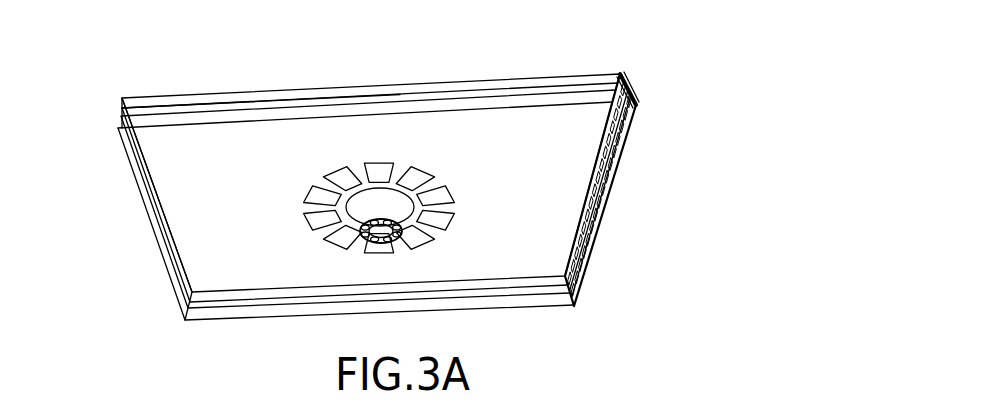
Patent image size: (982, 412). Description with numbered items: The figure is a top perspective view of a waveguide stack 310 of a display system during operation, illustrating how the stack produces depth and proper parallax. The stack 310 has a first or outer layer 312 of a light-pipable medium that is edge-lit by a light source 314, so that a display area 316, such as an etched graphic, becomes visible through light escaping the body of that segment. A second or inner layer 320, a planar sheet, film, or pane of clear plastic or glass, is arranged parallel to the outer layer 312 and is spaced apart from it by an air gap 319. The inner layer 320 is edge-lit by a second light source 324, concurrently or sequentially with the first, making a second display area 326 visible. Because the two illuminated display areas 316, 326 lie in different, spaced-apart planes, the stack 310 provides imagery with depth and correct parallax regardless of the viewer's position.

The waveguide stack 310 is at (208, 349).
The first or outer layer 312 is at (156, 252).
The light source 314 is at (617, 210).
The display area 316 is at (395, 246).
The air gap 319 is at (134, 110).
The second or inner layer 320 is at (150, 84).
The second light source 324 is at (640, 77).
The display area 326 is at (431, 153).